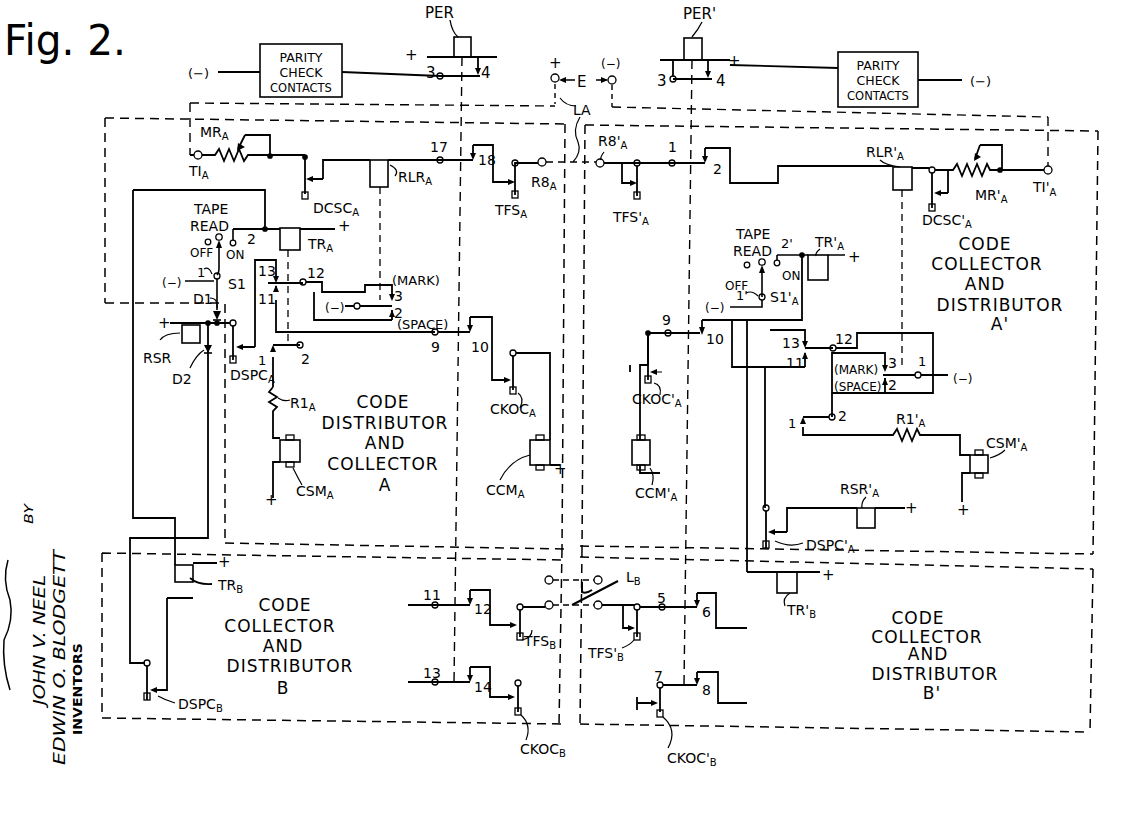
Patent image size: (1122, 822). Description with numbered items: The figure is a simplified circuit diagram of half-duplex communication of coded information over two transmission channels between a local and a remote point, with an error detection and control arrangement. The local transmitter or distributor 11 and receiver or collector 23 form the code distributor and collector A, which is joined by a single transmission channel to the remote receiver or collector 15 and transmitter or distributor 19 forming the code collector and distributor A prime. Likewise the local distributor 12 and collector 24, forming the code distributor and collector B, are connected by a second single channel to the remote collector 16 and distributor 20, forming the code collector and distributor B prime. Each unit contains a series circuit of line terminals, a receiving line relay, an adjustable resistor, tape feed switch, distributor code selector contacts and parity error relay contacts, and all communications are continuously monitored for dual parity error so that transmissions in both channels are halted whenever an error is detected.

The transmitter or distributor 11 is at (104, 226).
The receiver or collector 23 is at (304, 336).
The receiver or collector 15 is at (1098, 277).
The transmitter or distributor 19 is at (851, 342).
The transmitter or distributor 12 is at (102, 588).
The receiver or collector 24 is at (324, 632).
The receiver or collector 16 is at (1090, 659).
The transmitter or distributor 20 is at (847, 650).